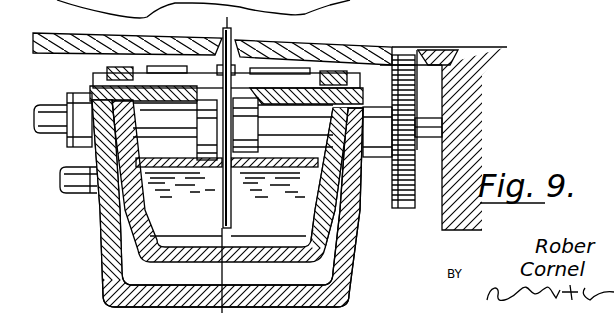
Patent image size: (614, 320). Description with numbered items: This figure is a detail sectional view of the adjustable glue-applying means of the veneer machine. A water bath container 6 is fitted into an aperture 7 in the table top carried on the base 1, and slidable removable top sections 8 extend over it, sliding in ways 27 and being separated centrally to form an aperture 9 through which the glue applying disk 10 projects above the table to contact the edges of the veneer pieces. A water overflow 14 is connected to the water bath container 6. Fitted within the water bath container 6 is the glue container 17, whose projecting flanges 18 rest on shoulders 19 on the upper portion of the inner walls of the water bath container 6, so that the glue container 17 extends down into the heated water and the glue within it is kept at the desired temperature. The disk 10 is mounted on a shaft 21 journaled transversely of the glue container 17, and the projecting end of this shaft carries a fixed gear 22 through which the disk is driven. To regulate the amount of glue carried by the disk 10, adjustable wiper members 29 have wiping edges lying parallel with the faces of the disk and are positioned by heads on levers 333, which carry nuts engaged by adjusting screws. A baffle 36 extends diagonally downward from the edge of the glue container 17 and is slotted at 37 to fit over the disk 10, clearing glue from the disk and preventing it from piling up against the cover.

The base 1 is at (449, 139).
The water bath container 6 is at (337, 292).
The aperture 7 is at (218, 20).
The slidable removable top sections 8 is at (372, 55).
The aperture 9 is at (238, 56).
The glue applying disk 10 is at (221, 183).
The water overflow 14 is at (78, 194).
The glue container 17 is at (328, 228).
The projecting flanges 18 is at (352, 140).
The shoulders 19 is at (90, 153).
The shaft 21 is at (143, 122).
The gear 22 is at (404, 210).
The ways 27 is at (448, 53).
The adjustable wiper members 29 is at (95, 78).
The baffle 36 is at (268, 166).
The slot 37 is at (231, 228).
The levers 333 is at (117, 67).